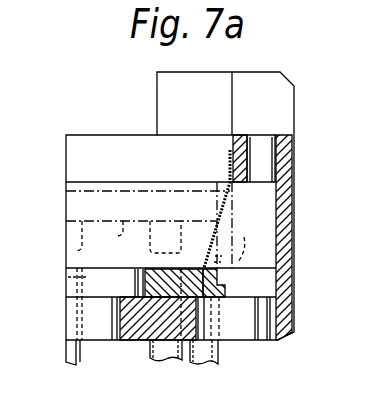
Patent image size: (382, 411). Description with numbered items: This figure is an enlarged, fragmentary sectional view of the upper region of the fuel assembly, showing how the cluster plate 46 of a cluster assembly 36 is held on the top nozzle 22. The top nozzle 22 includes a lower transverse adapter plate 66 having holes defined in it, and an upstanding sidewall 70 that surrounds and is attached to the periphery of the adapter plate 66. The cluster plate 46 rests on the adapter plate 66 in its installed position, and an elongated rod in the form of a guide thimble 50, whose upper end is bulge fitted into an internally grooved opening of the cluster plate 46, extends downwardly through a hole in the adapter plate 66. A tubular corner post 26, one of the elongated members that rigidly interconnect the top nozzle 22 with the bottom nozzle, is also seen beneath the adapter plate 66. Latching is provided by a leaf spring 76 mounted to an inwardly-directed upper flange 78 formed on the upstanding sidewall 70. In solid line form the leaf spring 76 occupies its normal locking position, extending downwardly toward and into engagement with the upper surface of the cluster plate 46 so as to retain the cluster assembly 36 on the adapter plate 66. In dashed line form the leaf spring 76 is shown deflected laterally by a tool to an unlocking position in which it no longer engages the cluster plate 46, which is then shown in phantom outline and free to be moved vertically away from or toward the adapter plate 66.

The top nozzle 22 is at (296, 149).
The upstanding sidewall 70 is at (294, 192).
The inwardly-directed upper flange 78 is at (233, 140).
The leaf spring 76 is at (219, 234).
The cluster plate 46 is at (122, 267).
The cluster assembly 36 is at (67, 286).
The guide thimble 50 is at (81, 345).
The adapter plate 66 is at (252, 344).
The tubular post 26 is at (218, 348).